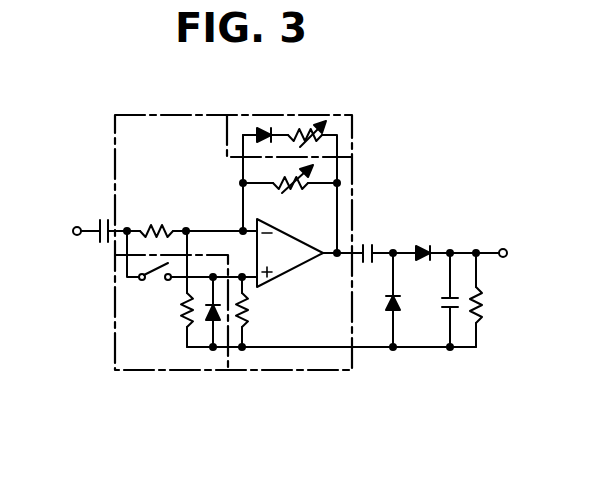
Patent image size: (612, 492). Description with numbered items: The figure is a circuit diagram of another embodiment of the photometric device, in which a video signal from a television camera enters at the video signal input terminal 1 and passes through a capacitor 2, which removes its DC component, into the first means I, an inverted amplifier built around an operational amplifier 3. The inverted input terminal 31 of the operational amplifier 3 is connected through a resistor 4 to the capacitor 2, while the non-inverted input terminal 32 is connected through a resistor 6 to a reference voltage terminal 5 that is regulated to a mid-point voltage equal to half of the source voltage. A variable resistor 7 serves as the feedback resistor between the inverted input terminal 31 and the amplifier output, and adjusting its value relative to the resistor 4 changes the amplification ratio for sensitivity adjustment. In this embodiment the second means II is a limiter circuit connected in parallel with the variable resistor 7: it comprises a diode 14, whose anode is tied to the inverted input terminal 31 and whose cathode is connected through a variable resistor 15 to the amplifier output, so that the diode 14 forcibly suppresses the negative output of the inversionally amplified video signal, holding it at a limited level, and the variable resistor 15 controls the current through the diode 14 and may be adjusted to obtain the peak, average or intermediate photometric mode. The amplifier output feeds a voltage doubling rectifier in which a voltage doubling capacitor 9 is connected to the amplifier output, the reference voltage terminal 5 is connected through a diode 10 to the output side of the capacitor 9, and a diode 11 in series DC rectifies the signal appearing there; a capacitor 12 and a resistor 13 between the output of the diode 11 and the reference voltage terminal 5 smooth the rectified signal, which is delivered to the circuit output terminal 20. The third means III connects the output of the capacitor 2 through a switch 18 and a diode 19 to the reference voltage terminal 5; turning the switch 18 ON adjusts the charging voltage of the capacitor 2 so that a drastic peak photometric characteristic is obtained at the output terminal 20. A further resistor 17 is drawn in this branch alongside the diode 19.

The video signal input terminal 1 is at (74, 226).
The capacitor 2 is at (101, 221).
The operational amplifier 3 is at (306, 260).
The resistor 4 is at (161, 224).
The reference voltage terminal 5 is at (322, 350).
The resistor 6 is at (249, 318).
The variable resistor 7 is at (299, 190).
The voltage doubling capacitor 9 is at (370, 243).
The diode 10 is at (388, 300).
The diode 11 is at (425, 245).
The capacitor 12 is at (457, 312).
The resistor 13 is at (481, 300).
The diode 14 is at (265, 128).
The variable resistor 15 is at (310, 128).
The resistor 17 is at (180, 308).
The switch 18 is at (158, 282).
The diode 19 is at (208, 322).
The circuit output terminal 20 is at (502, 248).
The inverted input terminal 31 is at (252, 236).
The non-inverted input terminal 32 is at (258, 288).
The first means I is at (112, 150).
The second means II is at (356, 144).
The third means III is at (140, 366).